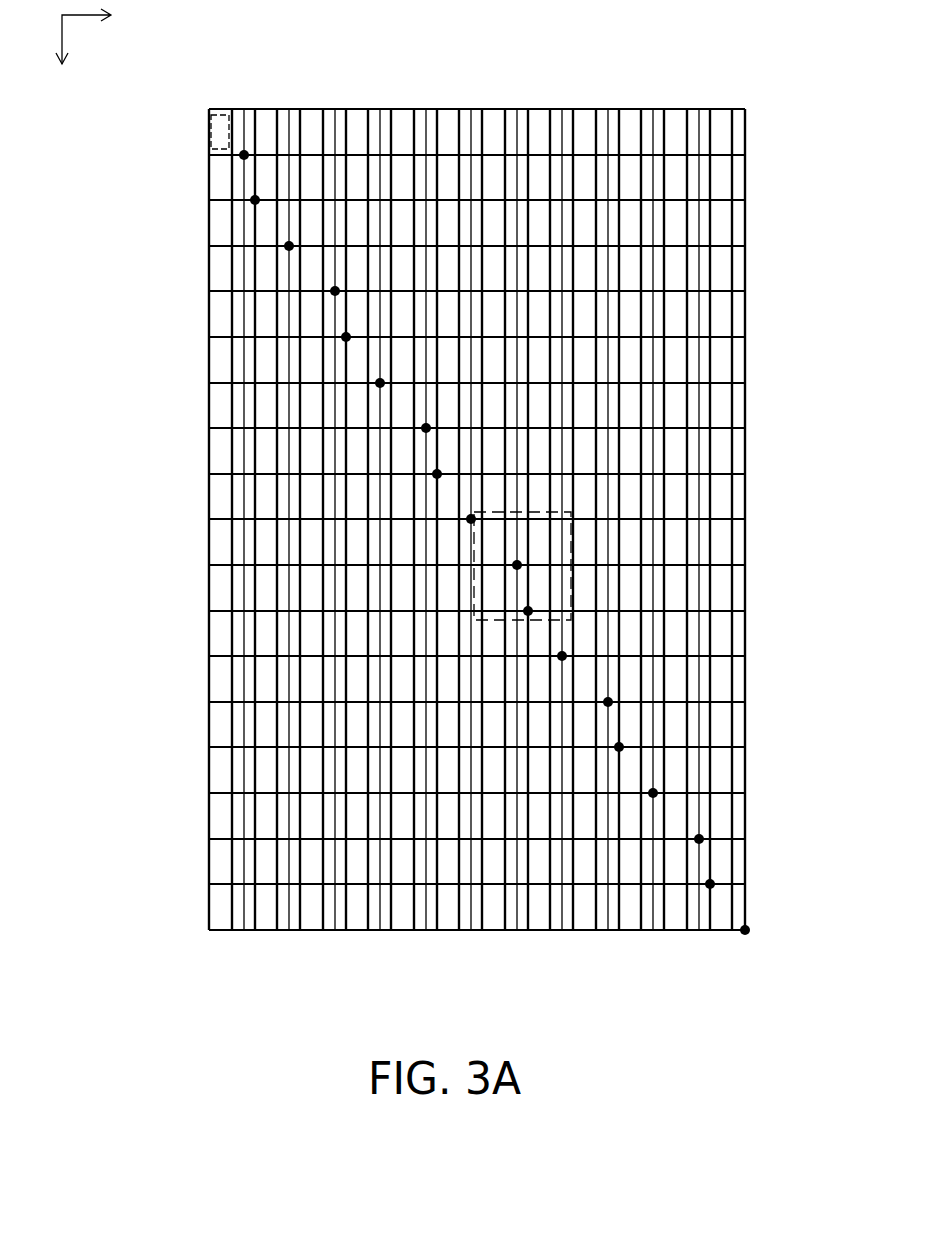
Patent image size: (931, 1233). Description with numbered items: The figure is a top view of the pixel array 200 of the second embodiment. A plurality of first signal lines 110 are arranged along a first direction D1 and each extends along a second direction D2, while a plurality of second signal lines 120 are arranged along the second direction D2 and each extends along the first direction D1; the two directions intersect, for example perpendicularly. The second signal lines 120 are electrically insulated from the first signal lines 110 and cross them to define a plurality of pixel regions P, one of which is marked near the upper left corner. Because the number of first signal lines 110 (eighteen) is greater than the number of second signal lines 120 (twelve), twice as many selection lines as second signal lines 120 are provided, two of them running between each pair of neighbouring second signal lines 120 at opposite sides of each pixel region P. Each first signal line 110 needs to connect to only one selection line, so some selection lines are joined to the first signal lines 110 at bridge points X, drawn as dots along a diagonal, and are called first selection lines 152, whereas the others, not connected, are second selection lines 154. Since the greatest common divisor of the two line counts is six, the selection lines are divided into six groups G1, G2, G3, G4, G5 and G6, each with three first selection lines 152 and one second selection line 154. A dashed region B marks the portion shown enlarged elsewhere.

The pixel array 200 is at (812, 1038).
The first signal lines 110 is at (194, 160).
The second signal lines 120 is at (237, 96).
The first selection lines 152 is at (341, 97).
The second selection lines 154 is at (305, 96).
The pixel regions P is at (208, 118).
The bridge points X is at (242, 158).
The region B is at (570, 537).
The first group G1 is at (288, 934).
The second group G2 is at (379, 934).
The third group G3 is at (470, 934).
The fourth group G4 is at (561, 934).
The fifth group G5 is at (652, 934).
The sixth group G6 is at (744, 934).
The first direction D1 is at (61, 79).
The second direction D2 is at (104, 36).